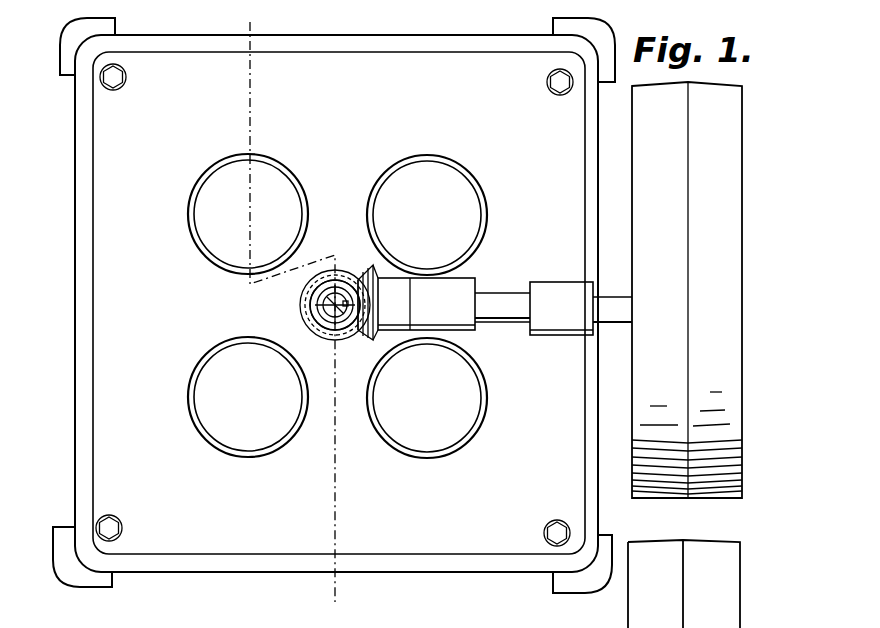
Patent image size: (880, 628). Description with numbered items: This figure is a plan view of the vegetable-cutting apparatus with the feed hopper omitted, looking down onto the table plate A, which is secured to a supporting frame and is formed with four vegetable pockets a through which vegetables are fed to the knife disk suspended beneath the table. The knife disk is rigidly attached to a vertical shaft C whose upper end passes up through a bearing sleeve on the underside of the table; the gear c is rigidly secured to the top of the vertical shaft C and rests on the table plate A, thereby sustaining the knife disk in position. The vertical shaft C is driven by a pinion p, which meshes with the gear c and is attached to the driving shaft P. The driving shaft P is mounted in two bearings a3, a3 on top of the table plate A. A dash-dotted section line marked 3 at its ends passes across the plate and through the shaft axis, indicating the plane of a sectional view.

The table plate A is at (334, 305).
The vegetable pockets a is at (337, 306).
The section line 3- 3 is at (290, 313).
The gear c is at (307, 303).
The vertical shaft C is at (323, 318).
The pinion p is at (365, 340).
The bearings a3 is at (485, 306).
The driving shaft P is at (499, 297).